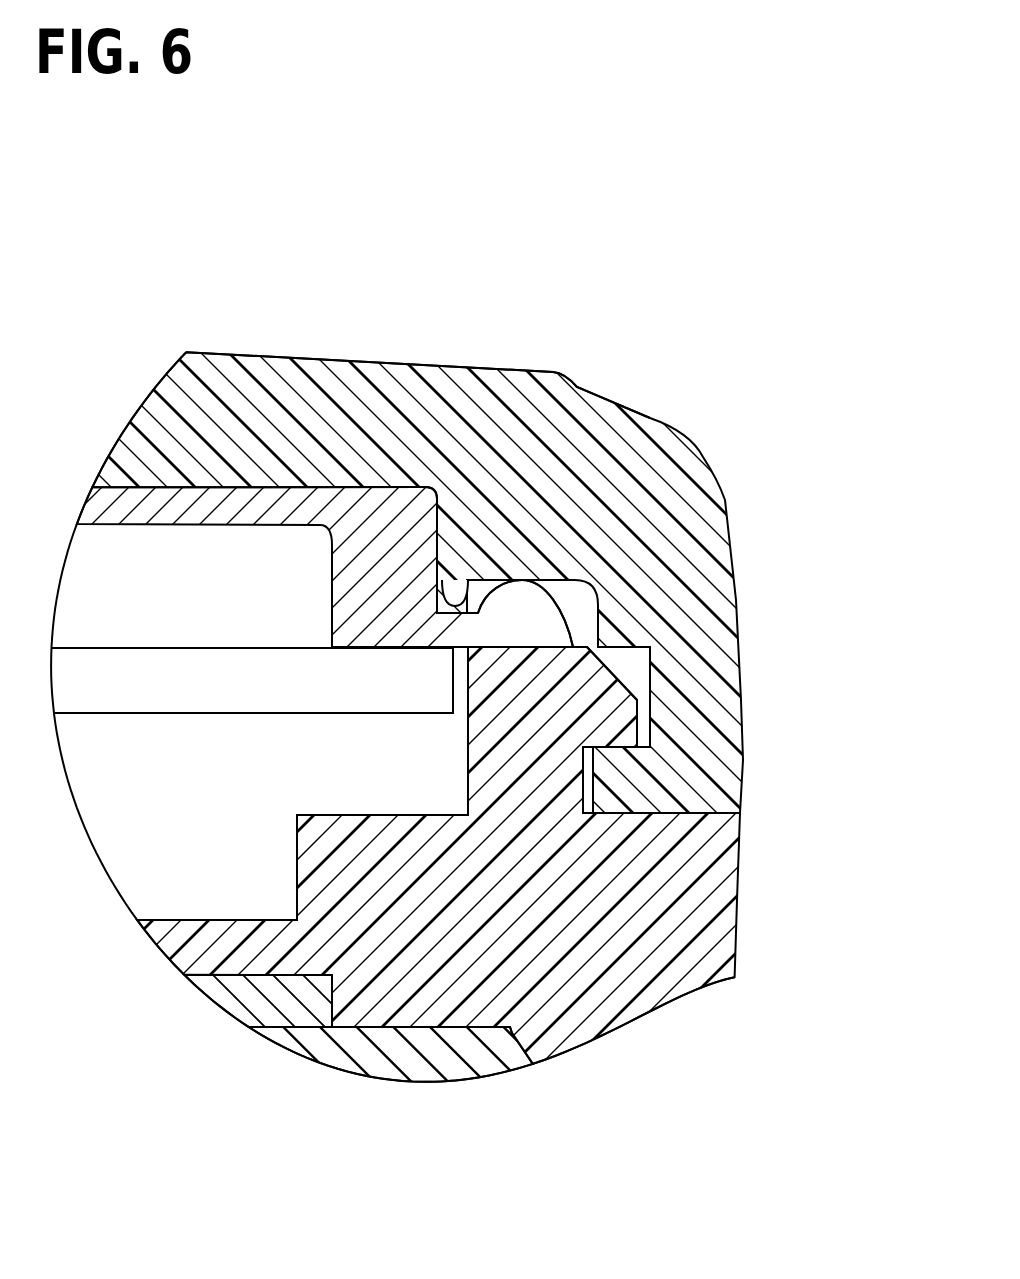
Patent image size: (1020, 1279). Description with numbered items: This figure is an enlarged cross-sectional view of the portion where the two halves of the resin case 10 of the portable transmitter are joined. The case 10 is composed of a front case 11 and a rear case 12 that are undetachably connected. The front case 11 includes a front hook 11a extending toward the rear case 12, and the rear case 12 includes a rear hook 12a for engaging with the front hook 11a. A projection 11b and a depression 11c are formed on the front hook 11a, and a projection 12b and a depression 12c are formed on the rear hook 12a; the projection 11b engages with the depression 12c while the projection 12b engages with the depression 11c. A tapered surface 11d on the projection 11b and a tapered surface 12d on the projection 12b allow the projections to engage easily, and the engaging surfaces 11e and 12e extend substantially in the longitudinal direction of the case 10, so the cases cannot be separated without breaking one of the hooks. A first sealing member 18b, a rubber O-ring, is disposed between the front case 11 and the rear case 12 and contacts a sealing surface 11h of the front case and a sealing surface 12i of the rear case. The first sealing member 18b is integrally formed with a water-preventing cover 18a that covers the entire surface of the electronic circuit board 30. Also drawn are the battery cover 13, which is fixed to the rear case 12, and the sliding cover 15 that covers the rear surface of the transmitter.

The case 10 is at (573, 368).
The front case 11 is at (703, 448).
The front hook 11a is at (600, 782).
The projection 11b is at (690, 814).
The depression 11c is at (650, 658).
The tapered surface 11d is at (605, 818).
The engaging surface 11e is at (625, 745).
The sealing surface 11h is at (501, 597).
The rear case 12 is at (736, 960).
The rear hook 12a is at (533, 700).
The projection 12b is at (640, 715).
The depression 12c is at (588, 790).
The tapered surface 12d is at (603, 655).
The engaging surface 12e is at (625, 745).
The sealing surface 12i is at (512, 628).
The battery cover 13 is at (220, 990).
The sliding cover 15 is at (410, 1057).
The water-preventing cover 18a is at (272, 505).
The first sealing member 18b is at (551, 607).
The electronic circuit board 30 is at (100, 720).